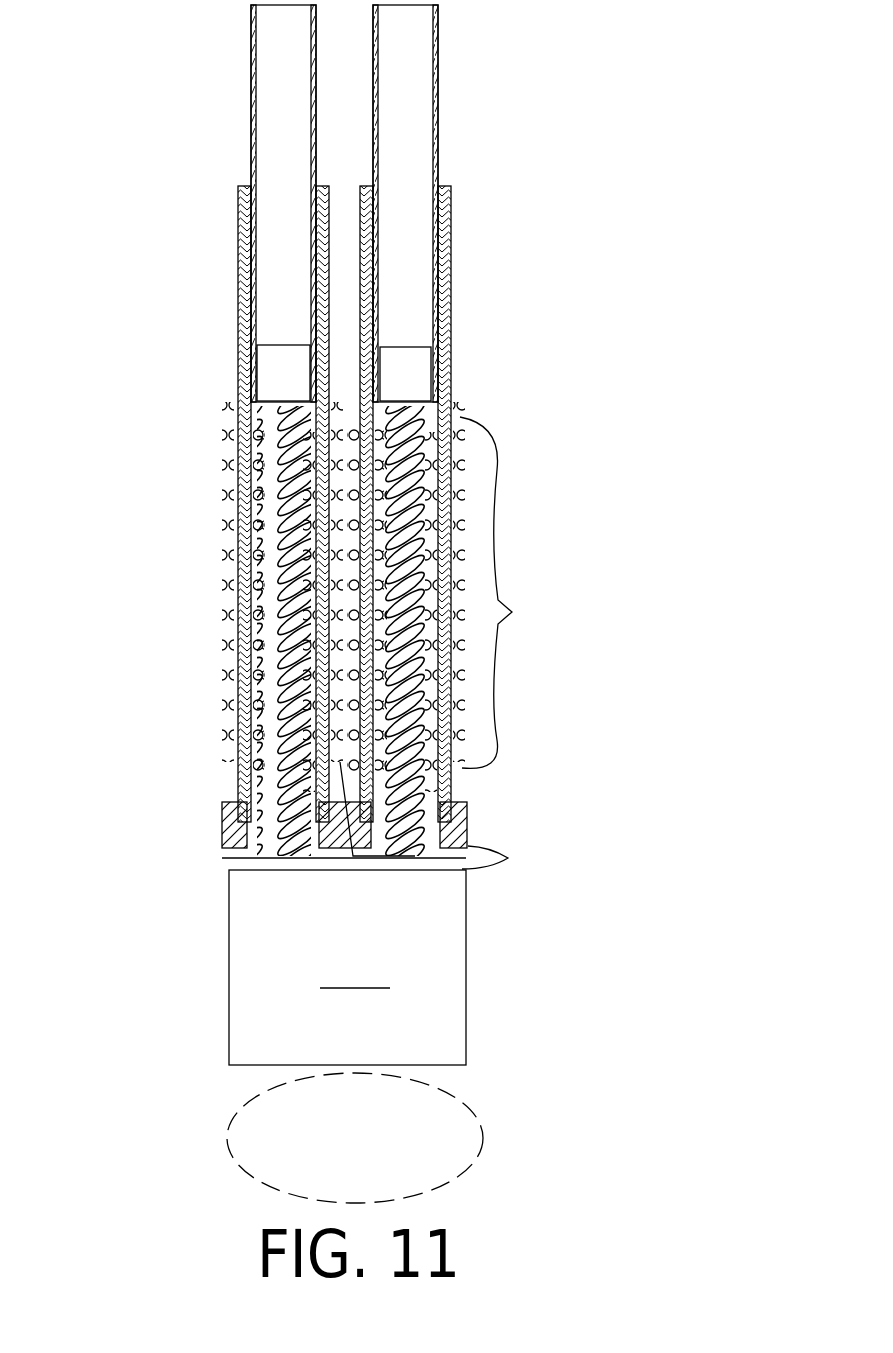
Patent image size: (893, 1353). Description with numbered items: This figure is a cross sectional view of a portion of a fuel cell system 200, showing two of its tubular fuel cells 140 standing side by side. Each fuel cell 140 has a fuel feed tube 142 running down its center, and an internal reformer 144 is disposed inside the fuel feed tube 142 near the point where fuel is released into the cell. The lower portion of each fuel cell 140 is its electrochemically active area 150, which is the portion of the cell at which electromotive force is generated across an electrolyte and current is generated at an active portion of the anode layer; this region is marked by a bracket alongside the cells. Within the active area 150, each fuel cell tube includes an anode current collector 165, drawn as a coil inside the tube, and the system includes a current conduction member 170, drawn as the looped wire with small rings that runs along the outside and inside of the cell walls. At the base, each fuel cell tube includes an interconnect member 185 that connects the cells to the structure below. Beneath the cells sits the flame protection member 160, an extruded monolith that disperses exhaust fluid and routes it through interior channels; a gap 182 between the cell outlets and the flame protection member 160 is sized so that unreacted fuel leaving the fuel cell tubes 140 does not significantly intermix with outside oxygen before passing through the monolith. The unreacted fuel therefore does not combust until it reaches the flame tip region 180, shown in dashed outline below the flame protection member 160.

The fuel cell system 200 is at (166, 118).
The fuel feed tube 142 is at (438, 125).
The fuel cell 140 is at (441, 308).
The internal reformer 144 is at (413, 382).
The current conduction member 170 is at (228, 510).
The anode current collector 165 is at (254, 585).
The electrochemically active area 150 is at (511, 592).
The flame protection member 160 is at (222, 820).
The interconnect member 185 is at (228, 858).
The gap 182 is at (451, 819).
The flame tip region 180 is at (320, 1155).